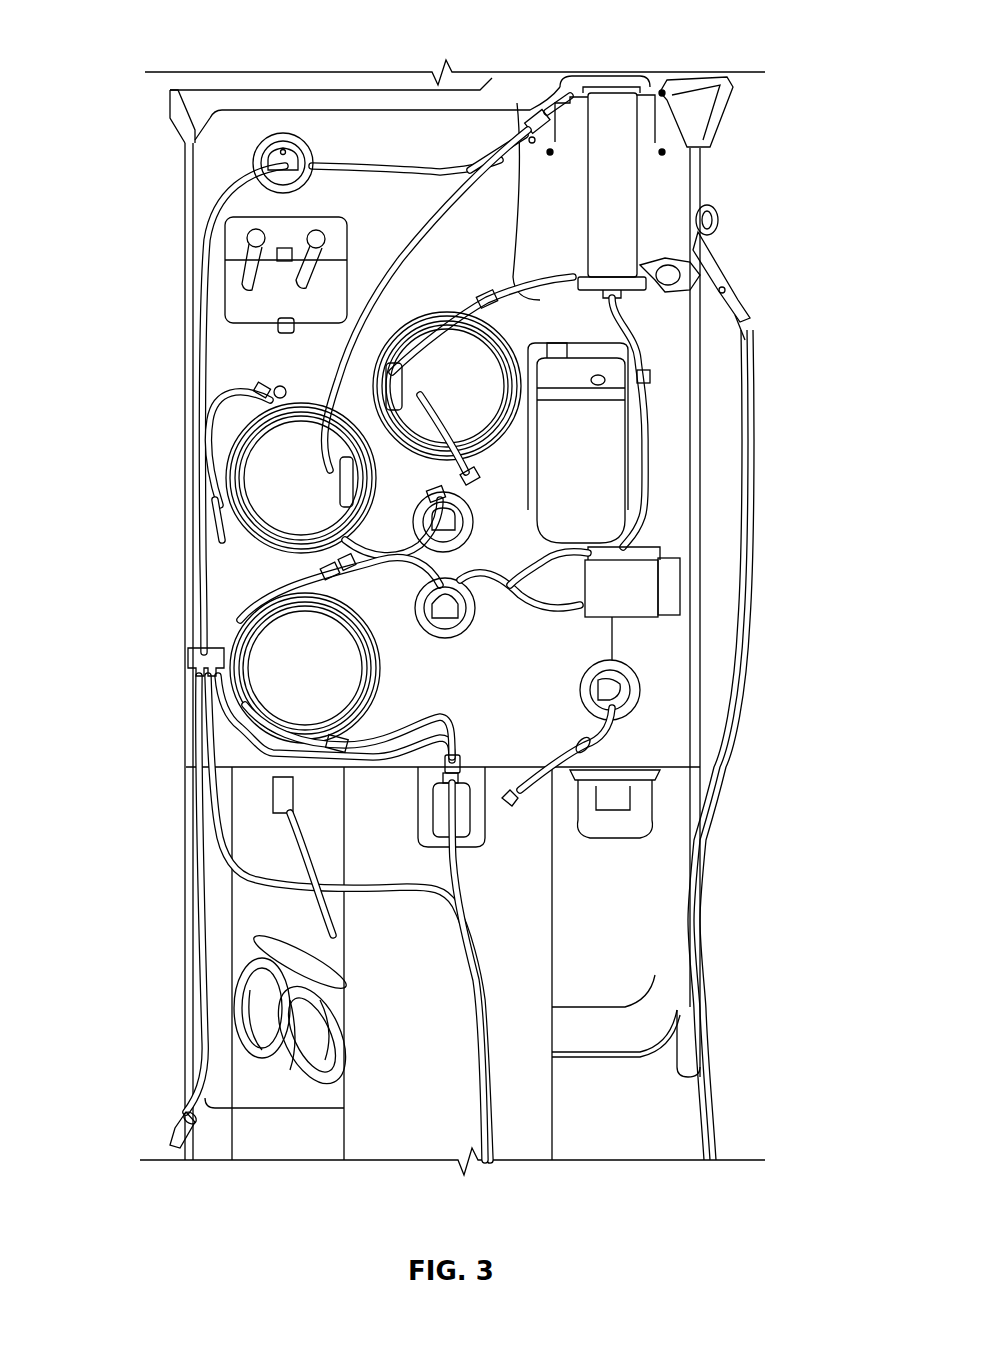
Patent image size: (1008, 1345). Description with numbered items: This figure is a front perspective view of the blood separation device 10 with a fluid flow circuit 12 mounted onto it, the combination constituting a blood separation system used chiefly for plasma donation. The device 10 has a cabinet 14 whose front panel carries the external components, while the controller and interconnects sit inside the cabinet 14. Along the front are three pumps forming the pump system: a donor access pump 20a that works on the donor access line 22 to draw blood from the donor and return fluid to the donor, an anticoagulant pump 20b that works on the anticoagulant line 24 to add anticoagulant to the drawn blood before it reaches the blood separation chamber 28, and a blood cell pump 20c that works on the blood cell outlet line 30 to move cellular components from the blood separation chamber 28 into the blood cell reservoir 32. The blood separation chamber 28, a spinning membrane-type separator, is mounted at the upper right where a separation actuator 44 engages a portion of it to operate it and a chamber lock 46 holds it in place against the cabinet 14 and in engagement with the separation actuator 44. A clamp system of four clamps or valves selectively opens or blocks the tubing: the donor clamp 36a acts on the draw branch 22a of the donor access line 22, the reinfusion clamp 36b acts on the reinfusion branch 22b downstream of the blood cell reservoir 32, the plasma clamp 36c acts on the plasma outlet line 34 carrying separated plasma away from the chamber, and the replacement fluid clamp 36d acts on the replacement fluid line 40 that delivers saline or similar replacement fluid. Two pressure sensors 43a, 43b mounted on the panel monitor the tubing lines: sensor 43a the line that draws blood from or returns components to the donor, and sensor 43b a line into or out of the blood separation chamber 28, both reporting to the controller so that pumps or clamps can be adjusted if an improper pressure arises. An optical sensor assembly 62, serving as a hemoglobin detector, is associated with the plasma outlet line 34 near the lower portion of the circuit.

The blood separation device 10 is at (367, 1093).
The fluid flow circuit 12 is at (220, 173).
The cabinet 14 is at (524, 699).
The donor access pump 20a is at (280, 653).
The anticoagulant pump 20b is at (275, 477).
The blood cell pump 20c is at (430, 382).
The donor access line 22 is at (470, 867).
The draw branch 22a is at (417, 240).
The reinfusion branch 22b is at (450, 610).
The anticoagulant line 24 is at (260, 873).
The blood separation chamber 28 is at (617, 167).
The blood cell outlet line 30 is at (532, 112).
The blood cell reservoir 32 is at (583, 477).
The plasma outlet line 34 is at (647, 447).
The donor clamp 36a is at (593, 553).
The reinfusion clamp 36b is at (340, 577).
The plasma clamp 36c is at (623, 693).
The replacement fluid clamp 36d is at (280, 155).
The replacement fluid line 40 is at (440, 173).
The pressure sensor 43a is at (247, 237).
The pressure sensor 43b is at (313, 233).
The separation actuator 44 is at (653, 82).
The chamber lock 46 is at (752, 307).
The optical sensor assembly 62 is at (633, 590).